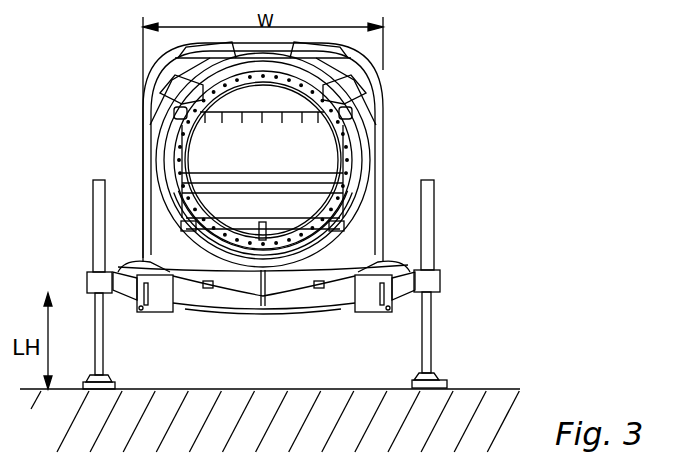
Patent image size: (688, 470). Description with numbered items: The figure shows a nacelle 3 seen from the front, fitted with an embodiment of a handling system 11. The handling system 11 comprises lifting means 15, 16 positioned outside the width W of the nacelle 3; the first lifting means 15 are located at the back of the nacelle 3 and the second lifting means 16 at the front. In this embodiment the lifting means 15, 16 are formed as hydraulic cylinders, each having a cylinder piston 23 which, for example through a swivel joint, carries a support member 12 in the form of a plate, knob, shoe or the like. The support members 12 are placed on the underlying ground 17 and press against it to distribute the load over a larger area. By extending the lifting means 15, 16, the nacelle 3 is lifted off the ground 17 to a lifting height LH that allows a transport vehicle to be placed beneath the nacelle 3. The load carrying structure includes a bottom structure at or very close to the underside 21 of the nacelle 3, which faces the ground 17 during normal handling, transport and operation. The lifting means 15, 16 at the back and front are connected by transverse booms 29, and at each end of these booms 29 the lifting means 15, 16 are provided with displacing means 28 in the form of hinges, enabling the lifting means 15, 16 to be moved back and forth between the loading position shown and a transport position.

The nacelle 3 is at (380, 69).
The handling system 11 is at (500, 256).
The support member 12 is at (441, 381).
The first lifting means 15 is at (331, 266).
The second lifting means 16 is at (428, 203).
The ground 17 is at (511, 389).
The underside 21 is at (275, 300).
The cylinder piston 23 is at (100, 352).
The displacing means 28 is at (352, 302).
The transverse booms 29 is at (190, 304).